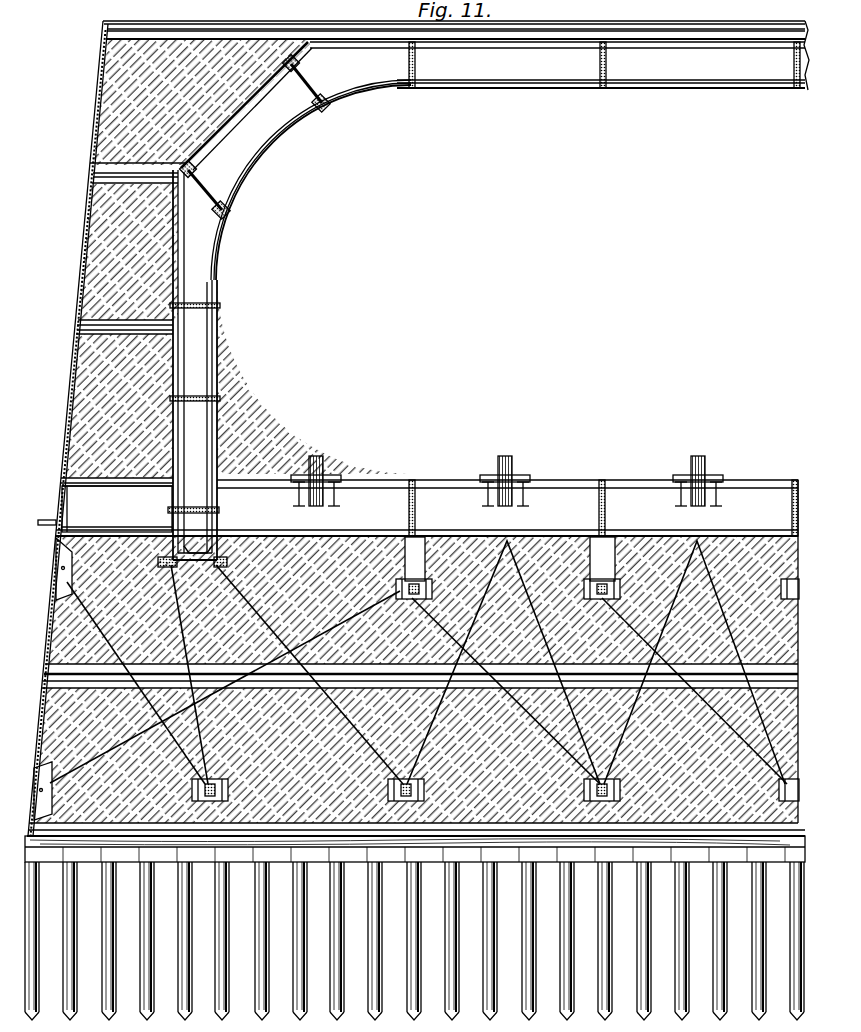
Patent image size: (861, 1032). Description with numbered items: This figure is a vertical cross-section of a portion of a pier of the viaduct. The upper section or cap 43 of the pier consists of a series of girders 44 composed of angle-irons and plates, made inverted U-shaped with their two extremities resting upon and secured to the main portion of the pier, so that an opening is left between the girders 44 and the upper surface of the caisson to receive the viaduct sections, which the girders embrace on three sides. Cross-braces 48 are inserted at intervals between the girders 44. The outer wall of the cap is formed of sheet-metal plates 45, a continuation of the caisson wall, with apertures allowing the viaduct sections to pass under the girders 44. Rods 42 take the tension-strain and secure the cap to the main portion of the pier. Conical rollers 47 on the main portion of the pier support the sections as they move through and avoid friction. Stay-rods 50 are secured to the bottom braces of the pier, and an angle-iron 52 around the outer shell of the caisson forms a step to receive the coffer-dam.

The rods 42 is at (93, 623).
The cap 43 is at (177, 279).
The girders 44 is at (695, 72).
The sheet-metal plates 45 is at (67, 378).
The conical rollers 47 is at (323, 459).
The cross-braces 48 is at (417, 66).
The stay-rods 50 is at (668, 622).
The angle-iron 52 is at (47, 527).